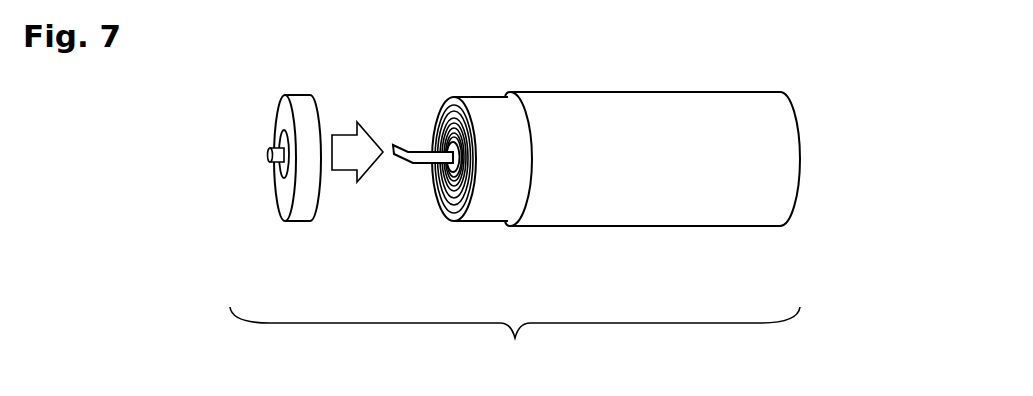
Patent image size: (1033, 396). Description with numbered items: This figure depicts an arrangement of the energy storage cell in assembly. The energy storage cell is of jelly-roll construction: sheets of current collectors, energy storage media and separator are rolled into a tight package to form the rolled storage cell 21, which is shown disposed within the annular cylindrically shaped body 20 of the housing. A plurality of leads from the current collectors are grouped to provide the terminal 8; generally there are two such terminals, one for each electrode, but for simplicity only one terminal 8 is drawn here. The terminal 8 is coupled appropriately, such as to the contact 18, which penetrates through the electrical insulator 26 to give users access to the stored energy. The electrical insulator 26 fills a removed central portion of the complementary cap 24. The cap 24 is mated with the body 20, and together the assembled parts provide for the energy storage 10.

The terminal 8 is at (422, 155).
The energy storage 10 is at (515, 335).
The contact 18 is at (270, 155).
The body 20 is at (692, 203).
The rolled storage cell 21 is at (490, 102).
The cap 24 is at (282, 203).
The electrical insulator 26 is at (283, 140).